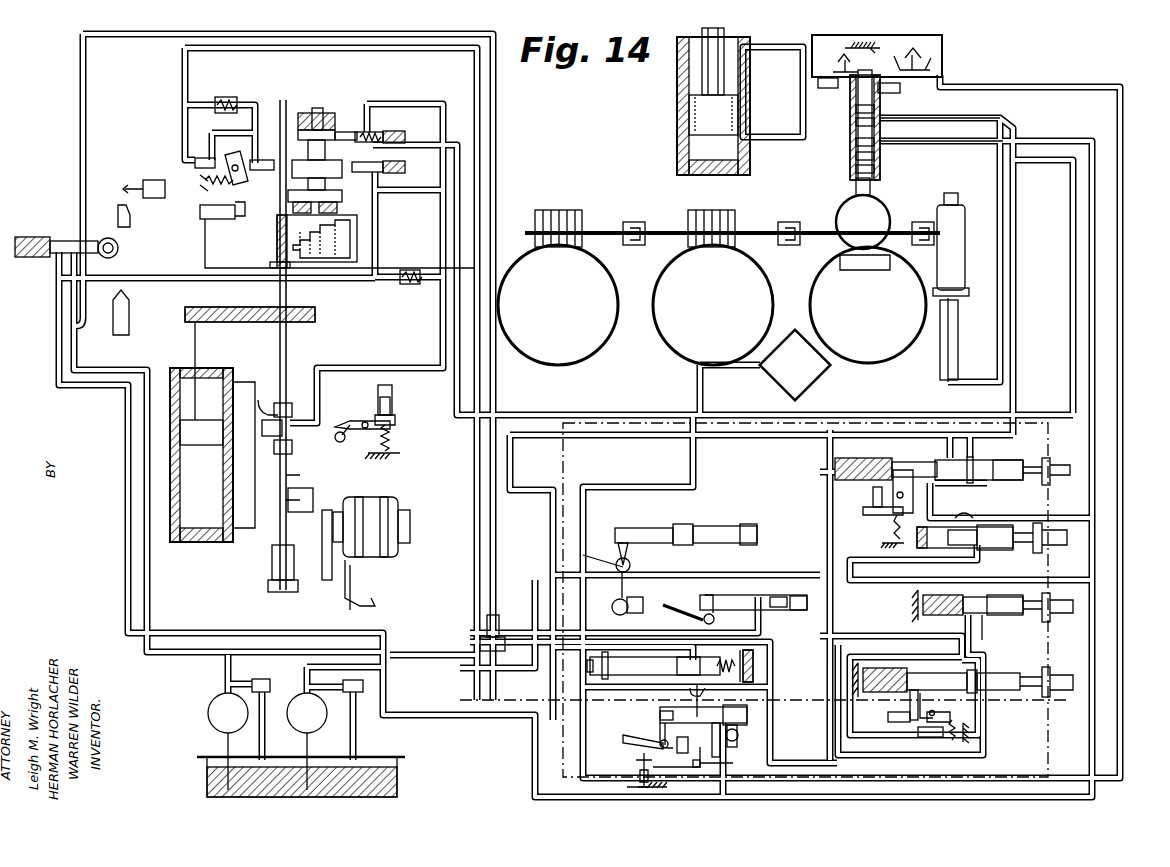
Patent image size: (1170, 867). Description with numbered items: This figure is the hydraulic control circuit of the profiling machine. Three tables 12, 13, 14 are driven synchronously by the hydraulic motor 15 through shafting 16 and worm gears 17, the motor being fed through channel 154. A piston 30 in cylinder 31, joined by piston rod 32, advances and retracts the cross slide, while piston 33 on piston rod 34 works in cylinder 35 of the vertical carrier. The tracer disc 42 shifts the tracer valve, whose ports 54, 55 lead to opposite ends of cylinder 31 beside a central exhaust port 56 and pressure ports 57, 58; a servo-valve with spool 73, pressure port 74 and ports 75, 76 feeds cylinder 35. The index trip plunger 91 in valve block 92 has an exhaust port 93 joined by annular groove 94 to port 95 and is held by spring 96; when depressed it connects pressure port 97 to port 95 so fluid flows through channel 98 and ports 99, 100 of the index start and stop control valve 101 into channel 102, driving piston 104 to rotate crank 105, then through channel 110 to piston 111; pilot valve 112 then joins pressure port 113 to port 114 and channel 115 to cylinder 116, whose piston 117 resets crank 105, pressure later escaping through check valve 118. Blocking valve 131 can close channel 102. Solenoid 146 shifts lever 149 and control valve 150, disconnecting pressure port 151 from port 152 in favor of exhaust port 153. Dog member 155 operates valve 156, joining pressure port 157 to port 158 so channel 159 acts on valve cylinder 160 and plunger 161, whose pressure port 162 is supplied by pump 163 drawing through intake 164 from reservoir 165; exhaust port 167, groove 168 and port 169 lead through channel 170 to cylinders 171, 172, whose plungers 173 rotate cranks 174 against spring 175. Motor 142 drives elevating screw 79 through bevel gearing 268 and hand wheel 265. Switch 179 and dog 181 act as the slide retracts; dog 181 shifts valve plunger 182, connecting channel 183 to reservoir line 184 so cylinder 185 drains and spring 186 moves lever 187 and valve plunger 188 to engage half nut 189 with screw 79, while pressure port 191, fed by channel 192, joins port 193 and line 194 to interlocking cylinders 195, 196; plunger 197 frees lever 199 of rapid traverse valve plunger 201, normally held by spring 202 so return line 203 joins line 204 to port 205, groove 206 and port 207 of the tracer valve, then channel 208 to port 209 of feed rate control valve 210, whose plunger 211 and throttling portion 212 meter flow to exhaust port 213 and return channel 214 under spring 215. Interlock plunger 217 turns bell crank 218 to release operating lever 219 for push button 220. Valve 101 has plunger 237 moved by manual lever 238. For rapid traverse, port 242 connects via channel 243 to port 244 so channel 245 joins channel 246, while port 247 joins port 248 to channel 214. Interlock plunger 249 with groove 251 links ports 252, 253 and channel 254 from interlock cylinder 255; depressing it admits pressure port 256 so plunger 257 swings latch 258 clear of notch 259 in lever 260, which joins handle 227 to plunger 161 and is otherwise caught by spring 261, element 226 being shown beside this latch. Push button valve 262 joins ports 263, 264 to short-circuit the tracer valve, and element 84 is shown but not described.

The gear 12 is at (532, 340).
The gear 13 is at (662, 322).
The table 14 is at (822, 272).
The prime mover 15 is at (955, 236).
The shafting 16 is at (758, 232).
The worm and worm gears 17 is at (565, 212).
The piston 30 is at (700, 118).
The cylinder 31 is at (678, 156).
The piston rod 32 is at (710, 76).
The piston 33 is at (185, 433).
The piston rod 34 is at (200, 340).
The cylinder 35 is at (175, 540).
The tracer disc 42 is at (878, 216).
The port 54 is at (858, 160).
The port 55 is at (856, 129).
The central exhaust port 56 is at (880, 160).
The pressure port 57 is at (878, 170).
The pressure port 58 is at (856, 148).
The central spool 73 is at (258, 418).
The pressure port 74 is at (292, 426).
The port 75 is at (268, 388).
The port 76 is at (274, 450).
The elevating screw 79 is at (290, 478).
The motor 84 is at (357, 236).
The index trip plunger 91 is at (1055, 680).
The valve block 92 is at (790, 345).
The exhaust port 93 is at (998, 690).
The annular groove 94 is at (995, 675).
The port 95 is at (990, 694).
The spring 96 is at (875, 693).
The pressure port 97 is at (962, 673).
The channel 98 is at (983, 752).
The port 99 is at (790, 610).
The port 100 is at (750, 610).
The index start and stop control valve 101 is at (768, 595).
The channel 102 is at (440, 579).
The piston 104 is at (203, 188).
The crank 105 is at (205, 168).
The channel 110 is at (256, 106).
The piston 111 is at (266, 160).
The pilot valve 112 is at (360, 172).
The pressure port 113 is at (385, 173).
The port 114 is at (372, 180).
The channel 115 is at (205, 244).
The cylinder 116 is at (200, 212).
The piston 117 is at (236, 216).
The check valve 118 is at (226, 97).
The blocking valve 131 is at (495, 650).
The motor 142 is at (400, 510).
The solenoid 146 is at (625, 612).
The table start-stop control lever 149 is at (585, 552).
The control valve 150 is at (757, 530).
The pressure port 151 is at (685, 546).
The port 152 is at (688, 524).
The exhaust port 153 is at (660, 528).
The channel 154 is at (950, 360).
The dog member 155 is at (298, 128).
The valve 156 is at (342, 130).
The pressure port 157 is at (373, 148).
The port 158 is at (370, 130).
The channel 159 is at (443, 103).
The valve cylinder 160 is at (747, 716).
The valve plunger 161 is at (660, 713).
The pressure port 162 is at (690, 700).
The pump 163 is at (226, 696).
The intake 164 is at (208, 720).
The reservoir 165 is at (209, 762).
The exhaust port 167 is at (735, 745).
The annular groove 168 is at (745, 700).
The port 169 is at (704, 739).
The channel 170 is at (1122, 770).
The cylinder 171 is at (900, 88).
The cylinder 172 is at (820, 90).
The plungers 173 is at (920, 80).
The cranks 174 is at (880, 60).
The spring 175 is at (830, 62).
The electric switch 179 is at (153, 180).
The dog 181 is at (130, 304).
The valve plunger 182 is at (105, 238).
The channel 183 is at (145, 265).
The reservoir line 184 is at (55, 258).
The cylinder 185 is at (392, 390).
The spring 186 is at (392, 440).
The lever 187 is at (395, 421).
The valve plunger 188 is at (392, 403).
The half nut 189 is at (340, 420).
The pressure port 191 is at (70, 280).
The channel 192 is at (96, 368).
The port 193 is at (80, 240).
The line 194 is at (82, 152).
The interlocking cylinder 195 is at (873, 498).
The interlocking cylinder 196 is at (878, 518).
The plunger 197 is at (870, 513).
The rapid traverse control valve lever 199 is at (905, 470).
The rapid traverse control valve plunger 201 is at (1040, 462).
The spring 202 is at (835, 470).
The return line 203 is at (938, 357).
The line 204 is at (1012, 358).
The port 205 is at (915, 137).
The annular groove 206 is at (856, 117).
The port 207 is at (905, 104).
The channel 208 is at (957, 340).
The port 209 is at (1000, 548).
The feed rate control valve 210 is at (1015, 550).
The plunger 211 is at (1010, 525).
The throttling portion 212 is at (978, 548).
The exhaust port 213 is at (964, 509).
The return channel 214 is at (1090, 743).
The spring 215 is at (922, 548).
The interlock plunger 217 is at (940, 737).
The bell crank 218 is at (952, 722).
The operating lever 219 is at (926, 705).
The manual push button 220 is at (901, 706).
The support 226 is at (630, 787).
The handle 227 is at (623, 740).
The plunger 237 is at (780, 597).
The manual control lever 238 is at (684, 614).
The port 242 is at (975, 462).
The channel 243 is at (870, 418).
The port 244 is at (980, 480).
The channel 245 is at (740, 572).
The channel 246 is at (650, 588).
The port 247 is at (950, 430).
The port 248 is at (948, 480).
The plunger 249 is at (1073, 605).
The annular groove 251 is at (990, 595).
The port 252 is at (985, 640).
The port 253 is at (990, 615).
The channel 254 is at (805, 745).
The interlock cylinder 255 is at (695, 747).
The pressure port 256 is at (957, 615).
The plunger 257 is at (733, 763).
The interlock lever 258 is at (680, 770).
The notch 259 is at (636, 760).
The lever 260 is at (660, 728).
The spring 261 is at (638, 775).
The valve 262 is at (632, 675).
The port 263 is at (690, 658).
The port 264 is at (707, 676).
The hand wheel 265 is at (362, 605).
The bevel gearing 268 is at (275, 592).